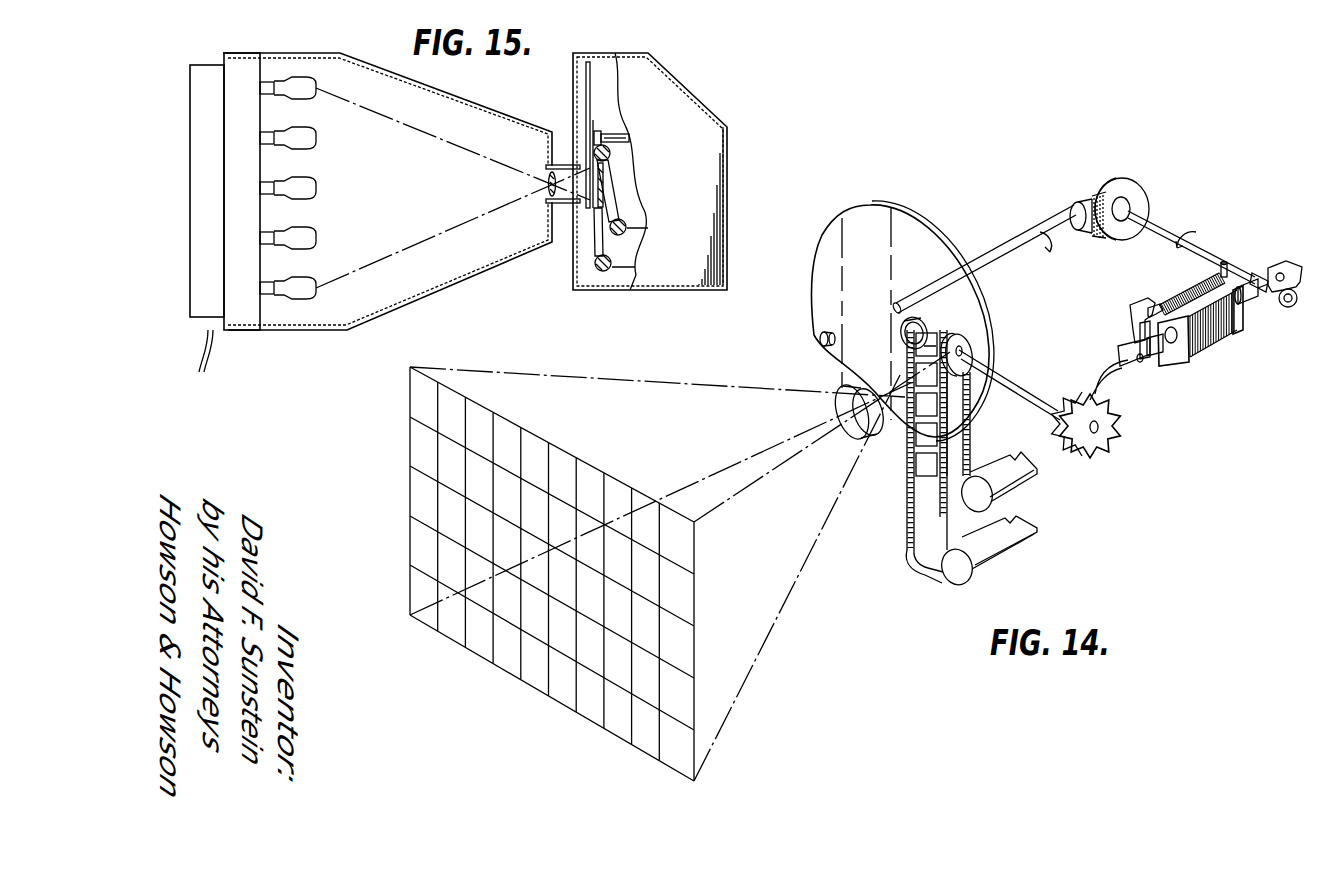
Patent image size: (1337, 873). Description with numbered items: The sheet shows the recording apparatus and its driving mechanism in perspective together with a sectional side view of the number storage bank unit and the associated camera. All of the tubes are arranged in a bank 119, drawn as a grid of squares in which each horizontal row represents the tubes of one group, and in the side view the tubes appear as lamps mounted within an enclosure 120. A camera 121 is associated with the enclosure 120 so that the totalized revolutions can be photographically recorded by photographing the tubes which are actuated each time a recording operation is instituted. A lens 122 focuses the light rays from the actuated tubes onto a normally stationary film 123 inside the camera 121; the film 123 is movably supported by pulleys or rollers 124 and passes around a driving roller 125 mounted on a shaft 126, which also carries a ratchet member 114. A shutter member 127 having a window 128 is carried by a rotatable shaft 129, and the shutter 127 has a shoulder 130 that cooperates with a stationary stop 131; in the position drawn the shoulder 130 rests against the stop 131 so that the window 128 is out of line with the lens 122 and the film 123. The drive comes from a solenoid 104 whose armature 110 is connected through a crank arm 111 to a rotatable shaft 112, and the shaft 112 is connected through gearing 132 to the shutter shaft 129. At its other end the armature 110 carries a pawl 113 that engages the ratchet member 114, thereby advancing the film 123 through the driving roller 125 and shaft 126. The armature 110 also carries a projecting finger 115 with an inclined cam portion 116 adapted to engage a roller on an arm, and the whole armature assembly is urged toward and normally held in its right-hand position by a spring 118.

In FIG. 14, the solenoid 104 is at (1213, 340).
In FIG. 14, the armature 110 is at (1247, 303).
In FIG. 14, the crank arm 111 is at (1287, 306).
In FIG. 14, the rotatable shaft 112 is at (1203, 250).
In FIG. 14, the pawl 113 is at (1112, 377).
In FIG. 14, the ratchet member 114 is at (1107, 454).
In FIG. 14, the projecting finger 115 is at (1145, 312).
In FIG. 14, the inclined cam portion 116 is at (1137, 308).
In FIG. 14, the spring 118 is at (1192, 283).
In FIG. 15, the bank of tubes 119 is at (240, 173).
In FIG. 14, the bank of tubes 119 is at (540, 680).
In FIG. 15, the enclosure 120 is at (462, 98).
In FIG. 15, the camera 121 is at (698, 170).
In FIG. 15, the lens 122 is at (546, 185).
In FIG. 14, the lens 122 is at (838, 410).
In FIG. 15, the film 123 is at (597, 230).
In FIG. 14, the film 123 is at (907, 472).
In FIG. 15, the pulleys or rollers 124 is at (623, 225).
In FIG. 14, the pulleys or rollers 124 is at (994, 500).
In FIG. 15, the driving roller 125 is at (611, 153).
In FIG. 14, the driving roller 125 is at (973, 350).
In FIG. 14, the shaft 126 is at (1031, 397).
In FIG. 15, the shutter member 127 is at (590, 75).
In FIG. 14, the shutter member 127 is at (910, 214).
In FIG. 14, the window 128 is at (977, 313).
In FIG. 15, the rotatable shaft 129 is at (618, 135).
In FIG. 14, the rotatable shaft 129 is at (1008, 252).
In FIG. 14, the shoulder 130 is at (821, 333).
In FIG. 14, the stationary stop 131 is at (823, 343).
In FIG. 14, the gearing 132 is at (1104, 188).